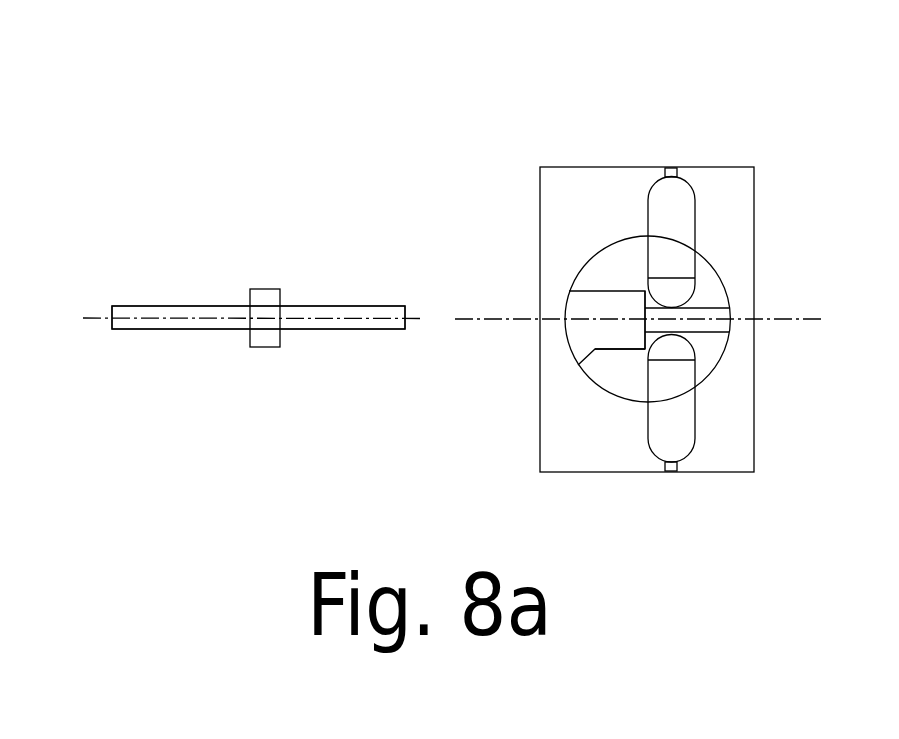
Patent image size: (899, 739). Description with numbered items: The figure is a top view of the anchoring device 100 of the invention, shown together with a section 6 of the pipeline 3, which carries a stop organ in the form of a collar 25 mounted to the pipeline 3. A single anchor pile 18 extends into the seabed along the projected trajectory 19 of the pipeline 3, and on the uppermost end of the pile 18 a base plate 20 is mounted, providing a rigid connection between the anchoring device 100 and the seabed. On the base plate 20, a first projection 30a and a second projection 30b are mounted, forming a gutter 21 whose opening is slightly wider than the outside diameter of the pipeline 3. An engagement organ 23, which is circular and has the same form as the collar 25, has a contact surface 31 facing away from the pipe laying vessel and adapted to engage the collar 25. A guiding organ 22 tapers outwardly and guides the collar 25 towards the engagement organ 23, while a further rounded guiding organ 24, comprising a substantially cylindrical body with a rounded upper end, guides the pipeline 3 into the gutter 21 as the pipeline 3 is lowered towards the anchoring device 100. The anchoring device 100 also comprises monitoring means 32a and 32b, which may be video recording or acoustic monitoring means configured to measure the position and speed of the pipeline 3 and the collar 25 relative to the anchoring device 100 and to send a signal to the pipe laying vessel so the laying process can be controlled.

The anchoring device 100 is at (548, 143).
The base plate 20 is at (712, 165).
The anchor pile 18 is at (718, 366).
The guiding organ 24 is at (705, 205).
The monitoring means 32a is at (672, 167).
The monitoring means 32b is at (675, 473).
The first projection 30a is at (632, 250).
The second projection 30b is at (627, 380).
The guiding organ 22 is at (627, 288).
The engagement organ 23 is at (637, 337).
The contact surface 31 is at (645, 301).
The gutter 21 is at (706, 307).
The projected trajectory 19 is at (808, 318).
The pipeline 3 is at (328, 330).
The section of pipeline 6 is at (174, 310).
The collar 25 is at (268, 295).